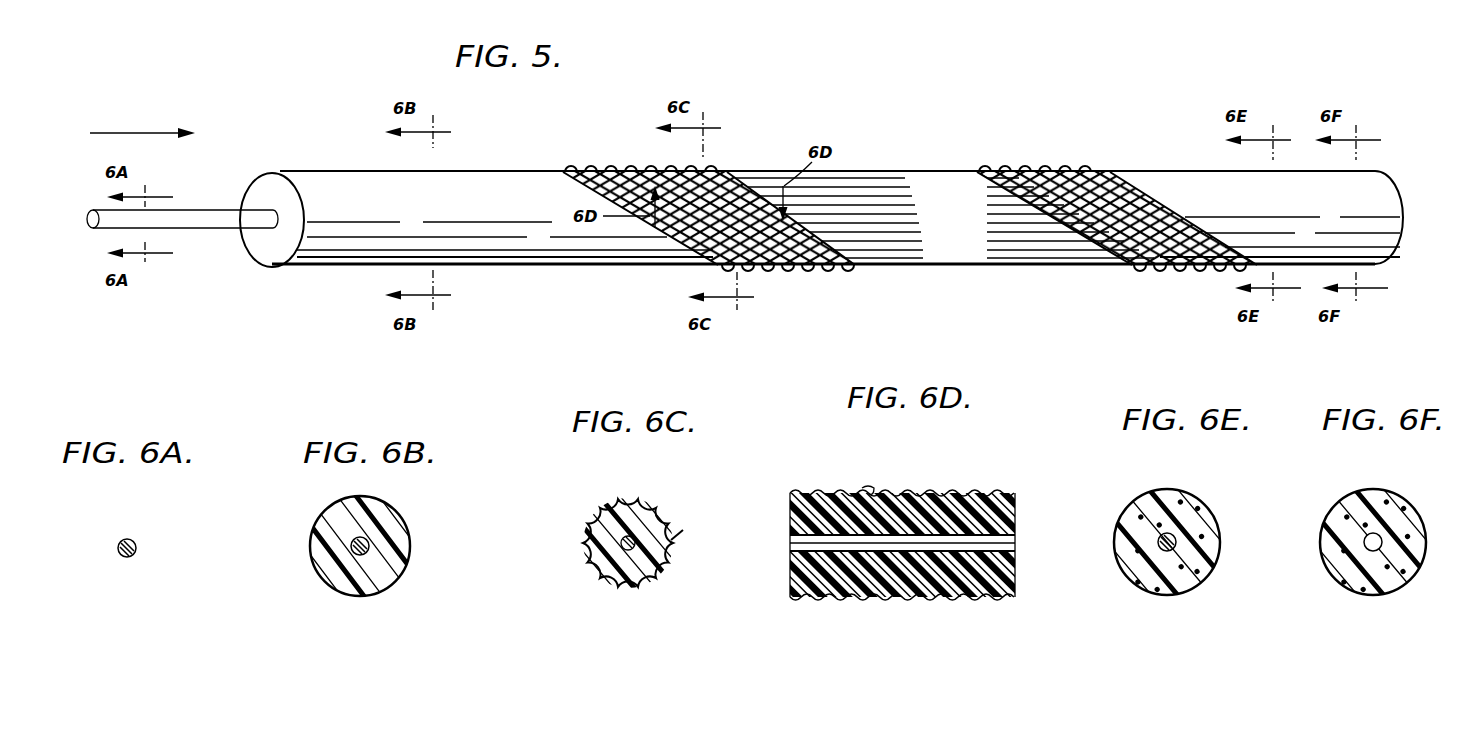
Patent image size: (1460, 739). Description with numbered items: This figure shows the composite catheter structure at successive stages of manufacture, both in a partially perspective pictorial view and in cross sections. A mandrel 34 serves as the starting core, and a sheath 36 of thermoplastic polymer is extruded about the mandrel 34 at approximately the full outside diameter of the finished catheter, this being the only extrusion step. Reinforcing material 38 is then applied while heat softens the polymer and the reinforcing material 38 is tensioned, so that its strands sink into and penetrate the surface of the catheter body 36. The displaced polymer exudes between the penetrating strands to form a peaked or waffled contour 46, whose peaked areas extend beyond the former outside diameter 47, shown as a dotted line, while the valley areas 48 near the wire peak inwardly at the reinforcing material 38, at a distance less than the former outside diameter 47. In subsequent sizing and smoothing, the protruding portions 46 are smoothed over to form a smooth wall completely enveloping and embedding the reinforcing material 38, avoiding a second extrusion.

In FIG. 5, the mandrel 34 is at (200, 212).
In FIG. 6A, the mandrel 34 is at (118, 540).
In FIG. 6B, the mandrel 34 is at (395, 565).
In FIG. 5, the sheath 36 is at (276, 180).
In FIG. 6B, the sheath 36 is at (395, 512).
In FIG. 5, the reinforcing material 38 is at (652, 238).
In FIG. 6C, the reinforcing material 38 is at (658, 506).
In FIG. 6D, the reinforcing material 38 is at (807, 493).
In FIG. 5, the peaked or waffled contour 46 is at (812, 272).
In FIG. 6C, the peaked or waffled contour 46 is at (598, 495).
In FIG. 6D, the peaked or waffled contour 46 is at (953, 477).
In FIG. 6C, the former outside diameter 47 is at (683, 530).
In FIG. 6D, the former outside diameter 47 is at (985, 493).
In FIG. 6C, the valley areas 48 is at (608, 585).
In FIG. 6D, the valley areas 48 is at (868, 493).